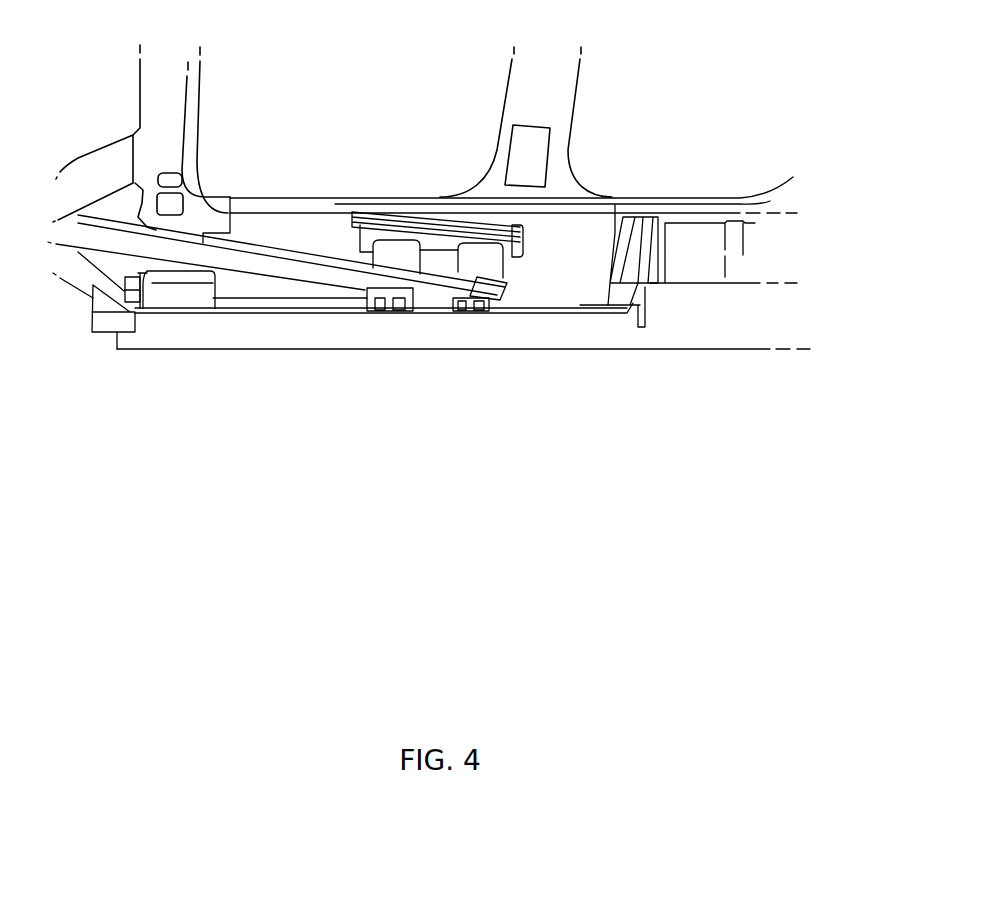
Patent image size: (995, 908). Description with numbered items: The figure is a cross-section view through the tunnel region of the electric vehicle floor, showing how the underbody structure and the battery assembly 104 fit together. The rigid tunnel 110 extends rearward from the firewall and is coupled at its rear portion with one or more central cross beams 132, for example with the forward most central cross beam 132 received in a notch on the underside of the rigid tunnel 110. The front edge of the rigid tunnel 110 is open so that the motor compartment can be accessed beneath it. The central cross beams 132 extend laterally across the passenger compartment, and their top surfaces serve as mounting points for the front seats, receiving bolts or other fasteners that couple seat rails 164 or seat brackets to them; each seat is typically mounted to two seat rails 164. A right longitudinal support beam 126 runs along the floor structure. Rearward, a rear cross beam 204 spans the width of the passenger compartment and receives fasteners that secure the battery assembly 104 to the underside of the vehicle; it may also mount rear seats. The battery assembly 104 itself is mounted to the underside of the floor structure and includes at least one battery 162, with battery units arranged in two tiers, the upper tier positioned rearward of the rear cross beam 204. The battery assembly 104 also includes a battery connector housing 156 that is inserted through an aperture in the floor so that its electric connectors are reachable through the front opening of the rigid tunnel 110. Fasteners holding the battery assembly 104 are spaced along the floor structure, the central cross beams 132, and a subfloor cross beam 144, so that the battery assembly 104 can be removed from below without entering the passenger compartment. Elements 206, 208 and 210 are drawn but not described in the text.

The battery assembly 104 is at (688, 364).
The rigid tunnel 110 is at (173, 242).
The right longitudinal support beam 126 is at (287, 203).
The central cross beam 132 is at (478, 257).
The subfloor cross beam 144 is at (100, 326).
The battery connector housing 156 is at (170, 292).
The battery 162 is at (312, 340).
The seat rail 164 is at (505, 292).
The rear cross beam 204 is at (642, 223).
The front foot 206 is at (380, 248).
The rear foot 208 is at (495, 258).
The mounting bracket 210 is at (400, 310).